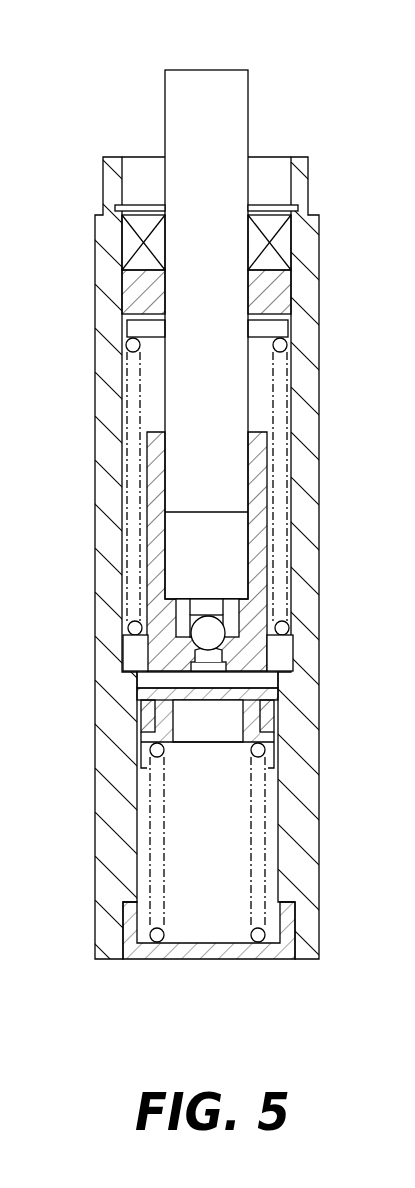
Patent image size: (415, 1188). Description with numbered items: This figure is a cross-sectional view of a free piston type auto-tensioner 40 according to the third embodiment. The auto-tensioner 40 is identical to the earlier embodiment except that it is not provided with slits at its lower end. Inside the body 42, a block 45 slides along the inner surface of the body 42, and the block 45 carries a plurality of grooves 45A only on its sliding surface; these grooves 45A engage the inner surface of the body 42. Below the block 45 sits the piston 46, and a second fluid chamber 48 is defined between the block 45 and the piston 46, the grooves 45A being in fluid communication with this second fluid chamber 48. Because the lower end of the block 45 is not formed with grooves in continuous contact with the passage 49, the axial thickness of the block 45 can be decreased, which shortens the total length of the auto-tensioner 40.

The auto-tensioner 40 is at (303, 116).
The body 42 is at (311, 347).
The block 45 is at (152, 450).
The grooves 45A is at (130, 652).
The piston 46 is at (243, 725).
The second fluid chamber 48 is at (280, 678).
The passage 49 is at (199, 676).